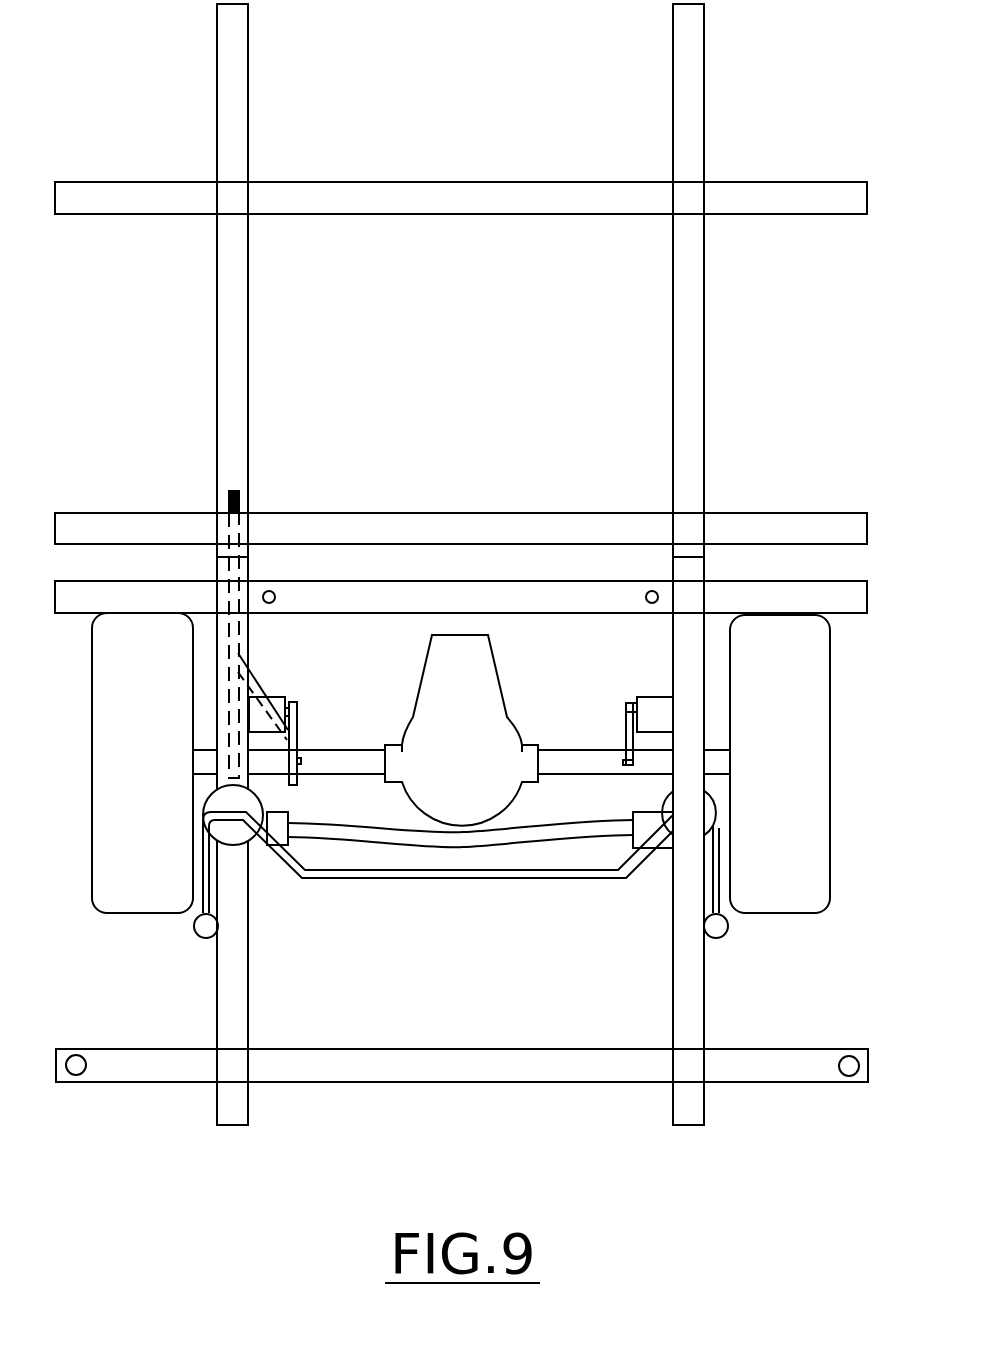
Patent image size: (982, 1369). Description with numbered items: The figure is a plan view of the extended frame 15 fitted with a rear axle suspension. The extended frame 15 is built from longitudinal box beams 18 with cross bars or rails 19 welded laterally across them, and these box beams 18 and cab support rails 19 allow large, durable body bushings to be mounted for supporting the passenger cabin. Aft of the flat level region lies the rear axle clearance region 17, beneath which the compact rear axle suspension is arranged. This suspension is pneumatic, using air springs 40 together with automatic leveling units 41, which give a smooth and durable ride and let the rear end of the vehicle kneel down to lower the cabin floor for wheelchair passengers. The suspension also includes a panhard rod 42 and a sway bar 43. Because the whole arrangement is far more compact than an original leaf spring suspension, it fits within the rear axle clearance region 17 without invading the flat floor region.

The extended frame 15 is at (462, 564).
The rear axle clearance region 17 is at (693, 988).
The box beams 18 is at (228, 325).
The cross bars or rails 19 is at (408, 193).
The air springs 40 is at (227, 830).
The automatic leveling units 41 is at (282, 700).
The panhard rod 42 is at (350, 832).
The sway bar 43 is at (533, 878).